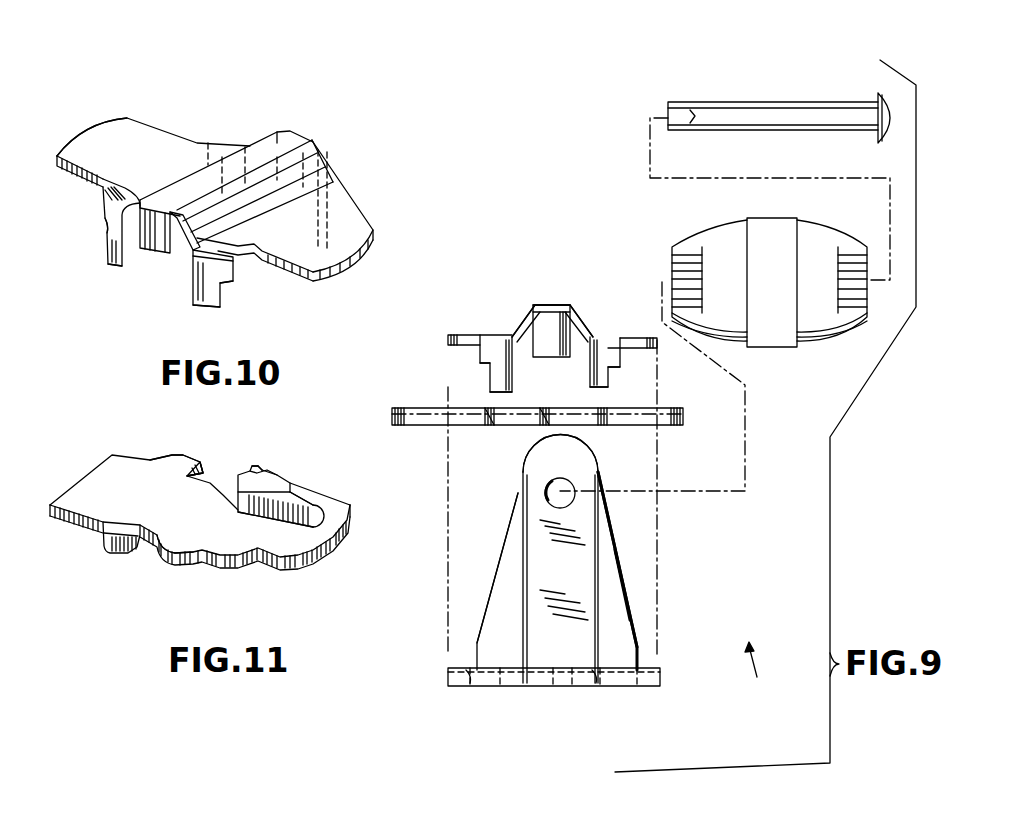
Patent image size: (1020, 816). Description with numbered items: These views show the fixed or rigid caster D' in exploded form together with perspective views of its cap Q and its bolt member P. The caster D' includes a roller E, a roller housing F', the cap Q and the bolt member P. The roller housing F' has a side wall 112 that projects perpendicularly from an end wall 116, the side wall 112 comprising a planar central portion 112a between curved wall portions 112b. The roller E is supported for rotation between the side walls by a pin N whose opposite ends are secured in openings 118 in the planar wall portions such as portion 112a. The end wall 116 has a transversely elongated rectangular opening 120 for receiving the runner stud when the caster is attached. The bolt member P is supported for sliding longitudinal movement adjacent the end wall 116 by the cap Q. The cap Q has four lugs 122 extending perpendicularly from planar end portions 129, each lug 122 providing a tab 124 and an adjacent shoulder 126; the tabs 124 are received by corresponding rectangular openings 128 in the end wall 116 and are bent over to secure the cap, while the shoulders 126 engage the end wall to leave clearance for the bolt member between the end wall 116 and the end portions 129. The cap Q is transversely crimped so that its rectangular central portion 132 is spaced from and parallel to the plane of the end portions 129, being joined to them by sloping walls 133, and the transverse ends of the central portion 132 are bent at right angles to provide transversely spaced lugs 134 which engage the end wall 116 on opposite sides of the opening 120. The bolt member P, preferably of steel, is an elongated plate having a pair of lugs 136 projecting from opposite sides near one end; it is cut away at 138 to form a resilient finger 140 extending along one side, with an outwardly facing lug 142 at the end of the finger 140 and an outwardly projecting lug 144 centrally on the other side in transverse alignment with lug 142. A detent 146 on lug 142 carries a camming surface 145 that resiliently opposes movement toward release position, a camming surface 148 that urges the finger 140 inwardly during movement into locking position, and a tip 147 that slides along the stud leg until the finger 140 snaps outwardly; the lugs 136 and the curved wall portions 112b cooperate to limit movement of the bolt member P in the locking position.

In FIG. 9, the side wall 112 is at (608, 528).
In FIG. 9, the planar central portion 112a is at (547, 452).
In FIG. 9, the curved wall portions 112b is at (507, 552).
In FIG. 9, the end wall 116 is at (458, 674).
In FIG. 9, the openings 118 is at (563, 488).
In FIG. 9, the rectangular opening 120 is at (553, 690).
In FIG. 10, the lugs 122 is at (205, 140).
In FIG. 9, the lugs 122 is at (487, 352).
In FIG. 10, the tab 124 is at (109, 258).
In FIG. 9, the tab 124 is at (490, 387).
In FIG. 10, the shoulder 126 is at (106, 230).
In FIG. 9, the shoulder 126 is at (487, 367).
In FIG. 9, the rectangular openings 128 is at (470, 690).
In FIG. 10, the planar end portions 129 is at (125, 140).
In FIG. 9, the planar end portions 129 is at (462, 333).
In FIG. 10, the rectangular central portion 132 is at (260, 143).
In FIG. 9, the rectangular central portion 132 is at (530, 308).
In FIG. 10, the sloping walls 133 is at (318, 180).
In FIG. 9, the sloping walls 133 is at (520, 320).
In FIG. 10, the lugs 134 is at (318, 150).
In FIG. 9, the lugs 134 is at (545, 323).
In FIG. 11, the lugs 136 is at (178, 463).
In FIG. 9, the lugs 136 is at (507, 418).
In FIG. 11, the cutaway 138 is at (313, 495).
In FIG. 11, the resilient finger 140 is at (327, 488).
In FIG. 11, the outwardly facing lug 142 is at (288, 482).
In FIG. 11, the outwardly projecting lug 144 is at (193, 550).
In FIG. 9, the outwardly projecting lug 144 is at (567, 418).
In FIG. 11, the camming surface 145 is at (273, 468).
In FIG. 11, the detent 146 is at (245, 470).
In FIG. 11, the tip 147 is at (267, 468).
In FIG. 11, the camming surface 148 is at (260, 470).
In FIG. 10, the cap Q is at (82, 126).
In FIG. 9, the cap Q is at (569, 296).
In FIG. 11, the bolt member P is at (298, 583).
In FIG. 9, the bolt member P is at (682, 406).
In FIG. 9, the pin N is at (725, 117).
In FIG. 9, the roller E is at (698, 247).
In FIG. 9, the roller housing F' is at (584, 559).
In FIG. 9, the fixed caster D' is at (760, 672).